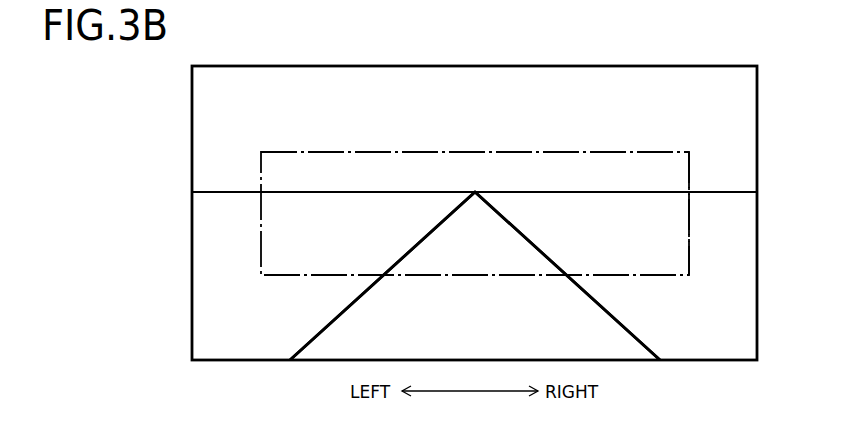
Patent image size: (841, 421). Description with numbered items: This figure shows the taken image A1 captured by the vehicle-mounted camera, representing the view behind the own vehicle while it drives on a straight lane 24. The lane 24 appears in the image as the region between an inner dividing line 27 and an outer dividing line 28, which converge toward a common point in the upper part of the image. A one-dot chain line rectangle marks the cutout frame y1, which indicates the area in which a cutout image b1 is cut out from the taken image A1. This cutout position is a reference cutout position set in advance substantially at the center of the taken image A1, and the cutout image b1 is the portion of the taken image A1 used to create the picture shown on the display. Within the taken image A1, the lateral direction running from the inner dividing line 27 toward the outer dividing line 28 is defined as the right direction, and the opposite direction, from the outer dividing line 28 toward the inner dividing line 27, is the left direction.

The taken image A1 is at (695, 82).
The cutout image b1 is at (551, 158).
The cutout frame y1 is at (689, 251).
The lane 24 is at (593, 312).
The inner dividing line 27 is at (312, 334).
The outer dividing line 28 is at (642, 341).